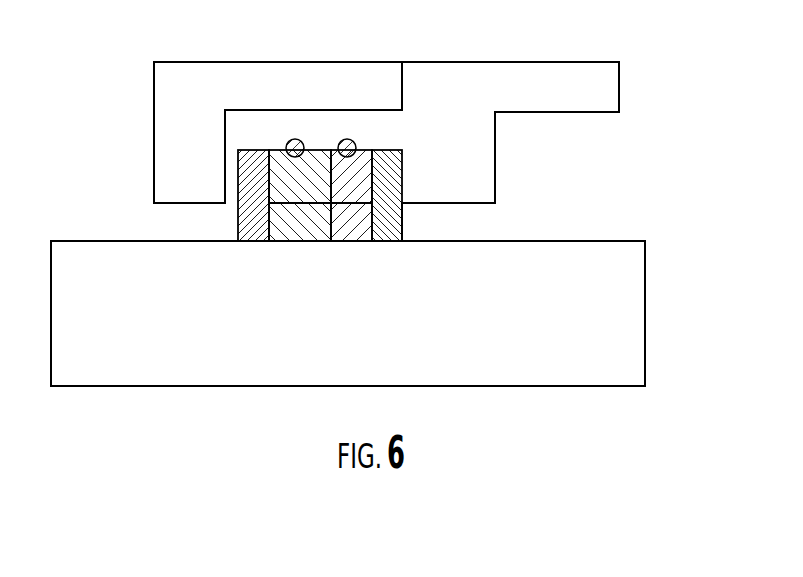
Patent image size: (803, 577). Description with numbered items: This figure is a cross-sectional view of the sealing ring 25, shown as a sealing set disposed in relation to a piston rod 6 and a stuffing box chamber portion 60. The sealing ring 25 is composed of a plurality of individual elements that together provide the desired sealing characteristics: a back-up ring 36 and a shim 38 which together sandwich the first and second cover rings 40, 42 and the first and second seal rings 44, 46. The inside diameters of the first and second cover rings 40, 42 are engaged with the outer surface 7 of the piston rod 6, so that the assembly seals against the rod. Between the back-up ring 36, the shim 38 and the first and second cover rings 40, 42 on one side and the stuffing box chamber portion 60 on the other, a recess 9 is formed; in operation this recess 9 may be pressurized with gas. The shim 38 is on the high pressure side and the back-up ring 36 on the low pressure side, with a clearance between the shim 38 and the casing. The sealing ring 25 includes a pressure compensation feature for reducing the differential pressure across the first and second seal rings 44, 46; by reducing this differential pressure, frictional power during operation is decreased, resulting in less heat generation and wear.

The piston rod 6 is at (504, 312).
The outer surface 7 is at (610, 225).
The recess 9 is at (252, 128).
The stuffing box chamber portion 60 is at (420, 90).
The shim 38 is at (245, 224).
The back-up ring 36 is at (392, 217).
The second seal ring 46 is at (310, 233).
The first seal ring 44 is at (348, 228).
The second cover ring 42 is at (317, 155).
The first cover ring 40 is at (362, 153).
The sealing ring 25 is at (285, 245).